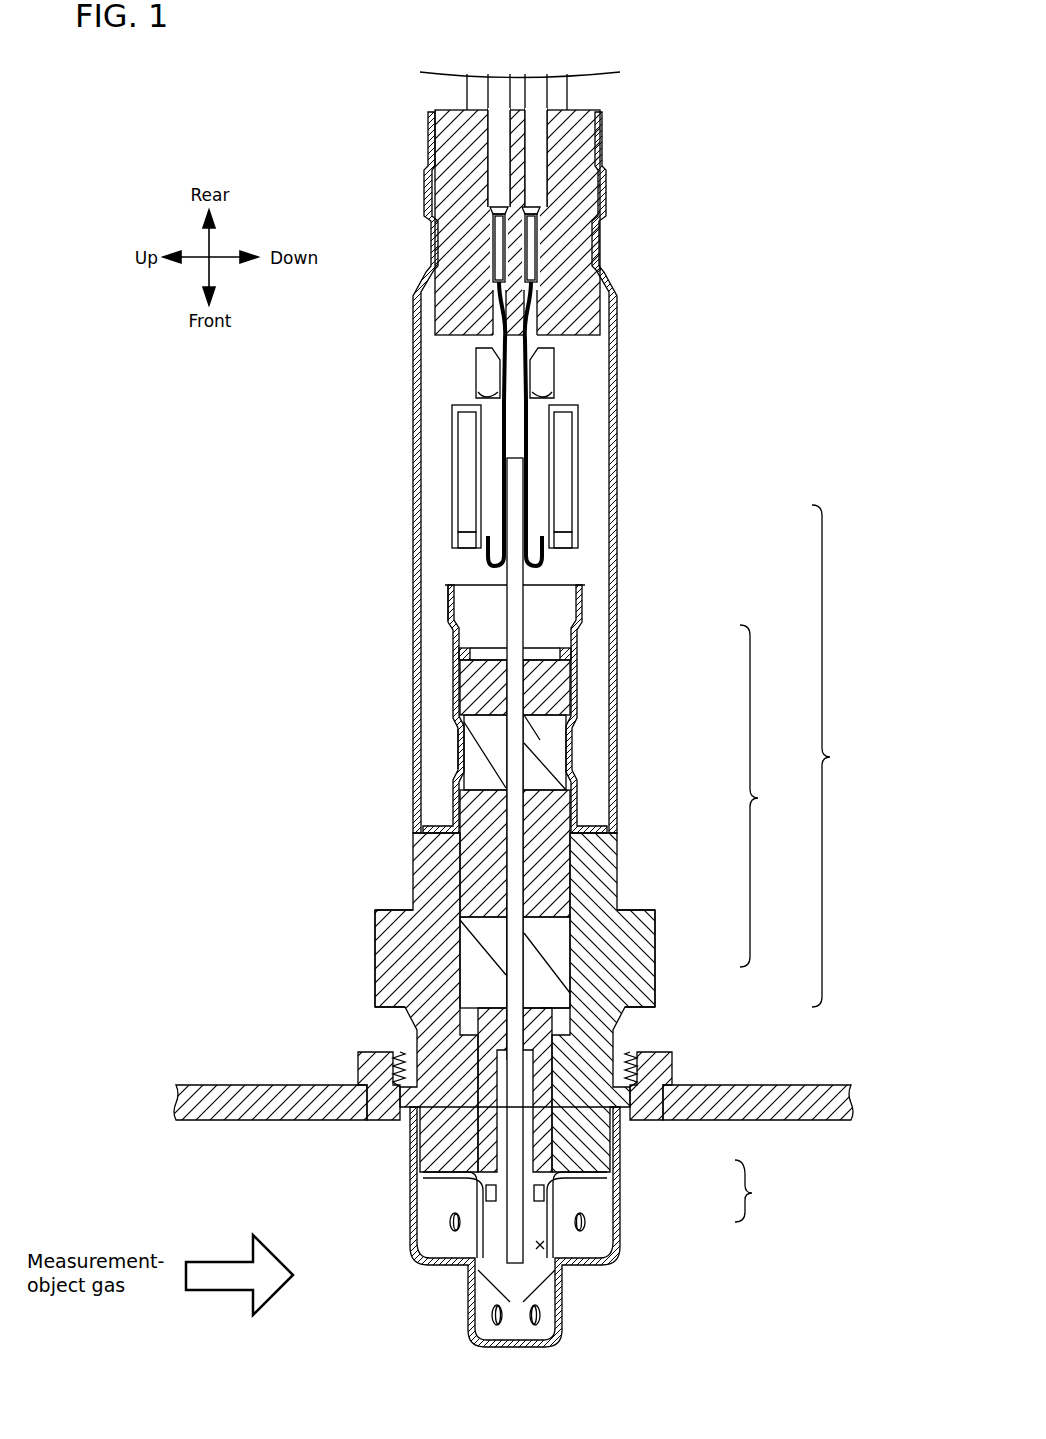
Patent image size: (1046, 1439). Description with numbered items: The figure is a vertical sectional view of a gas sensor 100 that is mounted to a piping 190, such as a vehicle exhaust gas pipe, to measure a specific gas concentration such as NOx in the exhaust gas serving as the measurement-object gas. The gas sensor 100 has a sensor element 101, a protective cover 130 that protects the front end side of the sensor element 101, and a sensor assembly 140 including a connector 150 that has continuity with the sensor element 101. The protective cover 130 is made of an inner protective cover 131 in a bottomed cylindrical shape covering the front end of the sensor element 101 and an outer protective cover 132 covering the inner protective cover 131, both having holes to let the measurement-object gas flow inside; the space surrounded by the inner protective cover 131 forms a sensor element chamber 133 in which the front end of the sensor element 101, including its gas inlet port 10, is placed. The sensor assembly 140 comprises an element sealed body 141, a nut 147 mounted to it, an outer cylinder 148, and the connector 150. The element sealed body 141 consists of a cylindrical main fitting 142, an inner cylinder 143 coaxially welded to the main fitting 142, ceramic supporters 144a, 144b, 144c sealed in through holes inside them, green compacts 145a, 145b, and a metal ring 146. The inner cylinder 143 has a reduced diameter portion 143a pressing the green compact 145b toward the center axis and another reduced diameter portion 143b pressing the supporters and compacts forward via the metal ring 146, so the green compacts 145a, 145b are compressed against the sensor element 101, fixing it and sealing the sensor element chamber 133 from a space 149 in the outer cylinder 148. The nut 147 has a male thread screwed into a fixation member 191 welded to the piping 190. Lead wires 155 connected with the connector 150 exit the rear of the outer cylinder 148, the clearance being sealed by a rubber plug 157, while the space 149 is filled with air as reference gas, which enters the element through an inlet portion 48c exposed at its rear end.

The gas sensor 100 is at (814, 143).
The gas inlet port 10 is at (514, 1264).
The sensor element 101 is at (517, 986).
The protective cover 130 is at (765, 1191).
The inner protective cover 131 is at (553, 1207).
The outer protective cover 132 is at (623, 1218).
The sensor element chamber 133 is at (545, 1245).
The sensor assembly 140 is at (844, 756).
The element sealed body 141 is at (772, 796).
The main fitting 142 is at (596, 1030).
The inner cylinder 143 is at (586, 614).
The reduced diameter portion 143a is at (460, 745).
The reduced diameter portion 143b is at (455, 630).
The ceramic supporter 144a is at (562, 1050).
The ceramic supporter 144b is at (562, 847).
The ceramic supporter 144c is at (568, 690).
The green compact 145a is at (562, 937).
The green compact 145b is at (567, 764).
The metal ring 146 is at (585, 655).
The nut 147 is at (655, 990).
The outer cylinder 148 is at (618, 572).
The space 149 is at (589, 374).
The connector 150 is at (580, 533).
The lead wires 155 is at (498, 157).
The rubber plug 157 is at (578, 292).
The inlet portion 48c is at (515, 457).
The piping 190 is at (258, 1100).
The fixation member 191 is at (372, 1065).